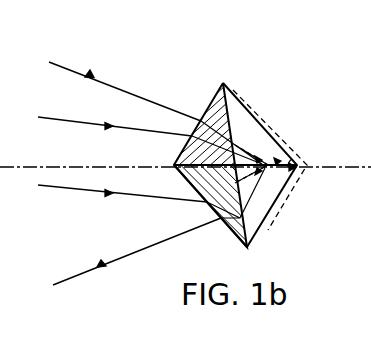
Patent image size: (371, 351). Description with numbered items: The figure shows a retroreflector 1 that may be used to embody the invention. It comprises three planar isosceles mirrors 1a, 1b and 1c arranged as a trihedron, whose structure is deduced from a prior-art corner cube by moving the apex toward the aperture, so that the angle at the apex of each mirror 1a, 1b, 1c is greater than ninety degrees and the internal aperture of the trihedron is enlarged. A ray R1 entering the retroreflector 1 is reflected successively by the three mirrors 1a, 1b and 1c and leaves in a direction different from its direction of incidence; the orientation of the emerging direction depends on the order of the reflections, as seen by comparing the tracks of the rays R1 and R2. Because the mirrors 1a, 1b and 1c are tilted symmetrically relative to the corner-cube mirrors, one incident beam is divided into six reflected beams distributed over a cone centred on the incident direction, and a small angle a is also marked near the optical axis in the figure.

The retroreflector 1 is at (244, 139).
The planar isosceles mirror 1a is at (248, 130).
The planar isosceles mirror 1b is at (223, 110).
The planar isosceles mirror 1c is at (237, 227).
The ray R1 is at (62, 117).
The ray R2 is at (66, 66).
The angle a is at (296, 166).